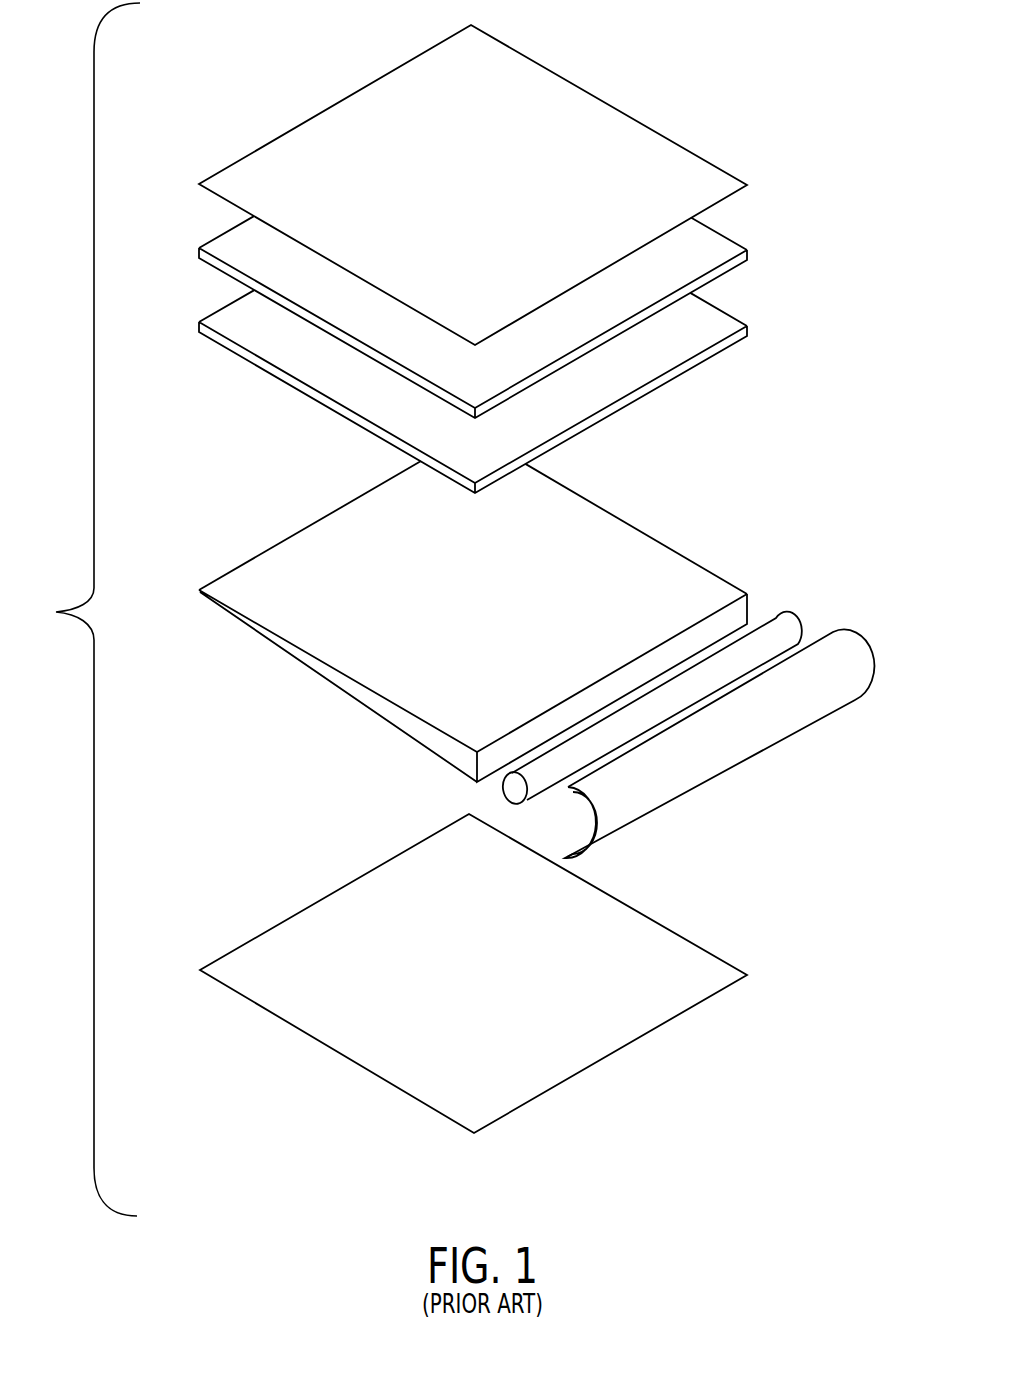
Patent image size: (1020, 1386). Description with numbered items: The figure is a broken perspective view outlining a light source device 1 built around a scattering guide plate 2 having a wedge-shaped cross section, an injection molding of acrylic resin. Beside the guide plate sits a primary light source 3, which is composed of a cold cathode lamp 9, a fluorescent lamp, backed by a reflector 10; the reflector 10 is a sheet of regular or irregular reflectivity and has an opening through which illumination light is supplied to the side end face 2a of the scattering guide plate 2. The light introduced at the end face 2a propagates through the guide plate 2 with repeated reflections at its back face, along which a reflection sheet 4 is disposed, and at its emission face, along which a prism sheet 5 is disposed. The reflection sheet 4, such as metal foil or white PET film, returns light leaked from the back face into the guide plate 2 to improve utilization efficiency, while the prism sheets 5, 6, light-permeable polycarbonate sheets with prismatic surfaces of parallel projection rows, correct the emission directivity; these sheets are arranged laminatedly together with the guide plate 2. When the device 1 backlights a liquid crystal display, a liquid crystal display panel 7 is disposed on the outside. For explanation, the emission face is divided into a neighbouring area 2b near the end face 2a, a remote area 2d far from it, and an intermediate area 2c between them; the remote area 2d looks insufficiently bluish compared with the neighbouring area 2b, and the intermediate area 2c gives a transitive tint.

The light source device 1 is at (208, 1128).
The scattering guide plate 2 is at (508, 614).
The side end face 2a is at (728, 616).
The neighbouring area 2b is at (613, 606).
The intermediate area 2c is at (528, 562).
The remote area 2d is at (388, 518).
The primary light source 3 is at (654, 681).
The reflection sheet 4 is at (652, 939).
The prism sheet 5 is at (730, 323).
The prism sheet 6 is at (728, 248).
The liquid crystal display panel 7 is at (695, 173).
The cold cathode lamp 9 is at (510, 789).
The reflector 10 is at (753, 730).